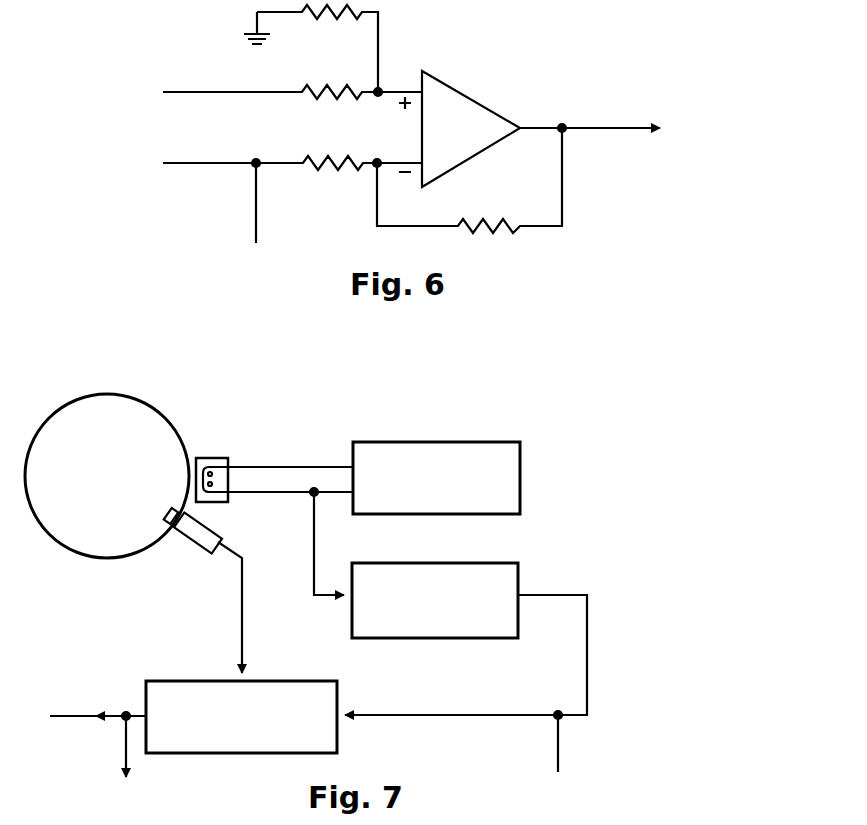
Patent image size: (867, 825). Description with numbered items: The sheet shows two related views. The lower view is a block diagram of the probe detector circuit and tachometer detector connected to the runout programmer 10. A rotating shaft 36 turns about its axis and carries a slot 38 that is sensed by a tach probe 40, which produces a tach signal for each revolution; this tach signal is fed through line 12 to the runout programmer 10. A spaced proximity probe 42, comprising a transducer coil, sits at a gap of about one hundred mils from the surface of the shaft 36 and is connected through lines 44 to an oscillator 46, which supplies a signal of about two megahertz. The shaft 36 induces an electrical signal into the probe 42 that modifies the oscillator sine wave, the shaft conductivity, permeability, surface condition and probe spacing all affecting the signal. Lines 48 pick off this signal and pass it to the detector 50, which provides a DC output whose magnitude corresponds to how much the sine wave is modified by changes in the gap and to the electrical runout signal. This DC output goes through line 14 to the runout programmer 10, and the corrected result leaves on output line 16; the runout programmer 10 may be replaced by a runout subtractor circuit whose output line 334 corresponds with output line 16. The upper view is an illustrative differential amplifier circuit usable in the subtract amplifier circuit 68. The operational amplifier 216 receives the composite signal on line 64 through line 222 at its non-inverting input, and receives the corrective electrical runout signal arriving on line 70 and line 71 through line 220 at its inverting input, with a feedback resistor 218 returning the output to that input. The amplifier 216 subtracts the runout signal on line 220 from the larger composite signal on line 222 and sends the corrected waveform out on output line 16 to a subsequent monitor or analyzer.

In FIG. 6, the composite signal input line 64 is at (222, 92).
In FIG. 6, the input line 70 is at (200, 165).
In FIG. 6, the electrical runout signal line 71 is at (256, 195).
In FIG. 6, the inverting input line 220 is at (400, 160).
In FIG. 6, the non-inverting input line 222 is at (393, 92).
In FIG. 6, the subtract amplifier circuit 68 is at (500, 86).
In FIG. 6, the operational amplifier 216 is at (503, 118).
In FIG. 6, the feedback resistor 218 is at (563, 187).
In FIG. 6, the output line 16 is at (605, 130).
In FIG. 7, the output line 16 is at (72, 715).
In FIG. 7, the rotating shaft 36 is at (138, 402).
In FIG. 7, the slot 38 is at (165, 515).
In FIG. 7, the tach probe 40 is at (195, 546).
In FIG. 7, the proximity probe 42 is at (212, 466).
In FIG. 7, the lines 44 is at (287, 463).
In FIG. 7, the oscillator 46 is at (437, 442).
In FIG. 7, the lines 48 is at (313, 544).
In FIG. 7, the detector 50 is at (497, 563).
In FIG. 7, the line 12 is at (241, 610).
In FIG. 7, the runout programmer 10 is at (325, 681).
In FIG. 7, the line 14 is at (560, 746).
In FIG. 7, the output line 334 is at (122, 731).